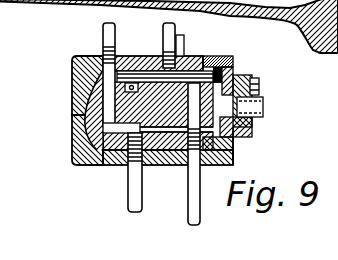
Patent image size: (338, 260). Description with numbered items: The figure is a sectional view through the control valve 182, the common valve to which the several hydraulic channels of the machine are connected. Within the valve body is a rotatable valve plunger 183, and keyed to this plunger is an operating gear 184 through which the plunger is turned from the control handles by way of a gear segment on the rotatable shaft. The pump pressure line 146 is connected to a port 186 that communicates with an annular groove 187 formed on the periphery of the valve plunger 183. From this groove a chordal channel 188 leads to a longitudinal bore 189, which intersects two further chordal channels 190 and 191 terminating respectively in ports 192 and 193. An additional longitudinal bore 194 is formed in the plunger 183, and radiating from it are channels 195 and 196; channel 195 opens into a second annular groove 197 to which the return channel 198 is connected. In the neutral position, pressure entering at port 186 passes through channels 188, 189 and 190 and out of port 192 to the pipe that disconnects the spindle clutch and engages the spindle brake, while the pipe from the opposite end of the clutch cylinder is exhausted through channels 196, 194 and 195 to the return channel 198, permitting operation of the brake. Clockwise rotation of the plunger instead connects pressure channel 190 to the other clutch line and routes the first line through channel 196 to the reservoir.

The pump pressure line 146 is at (201, 180).
The control valve 182 is at (72, 130).
The valve plunger 183 is at (86, 100).
The operating gear 184 is at (259, 83).
The port 186 is at (186, 178).
The annular groove 187 is at (250, 140).
The chordal channel 188 is at (252, 131).
The longitudinal bore 189 is at (120, 56).
The chordal channel 190 is at (184, 56).
The chordal channel 191 is at (127, 55).
The port 192 is at (160, 72).
The port 193 is at (173, 167).
The longitudinal bore 194 is at (121, 133).
The channel 195 is at (72, 115).
The channel 196 is at (130, 152).
The annular groove 197 is at (77, 56).
The return channel 198 is at (103, 34).